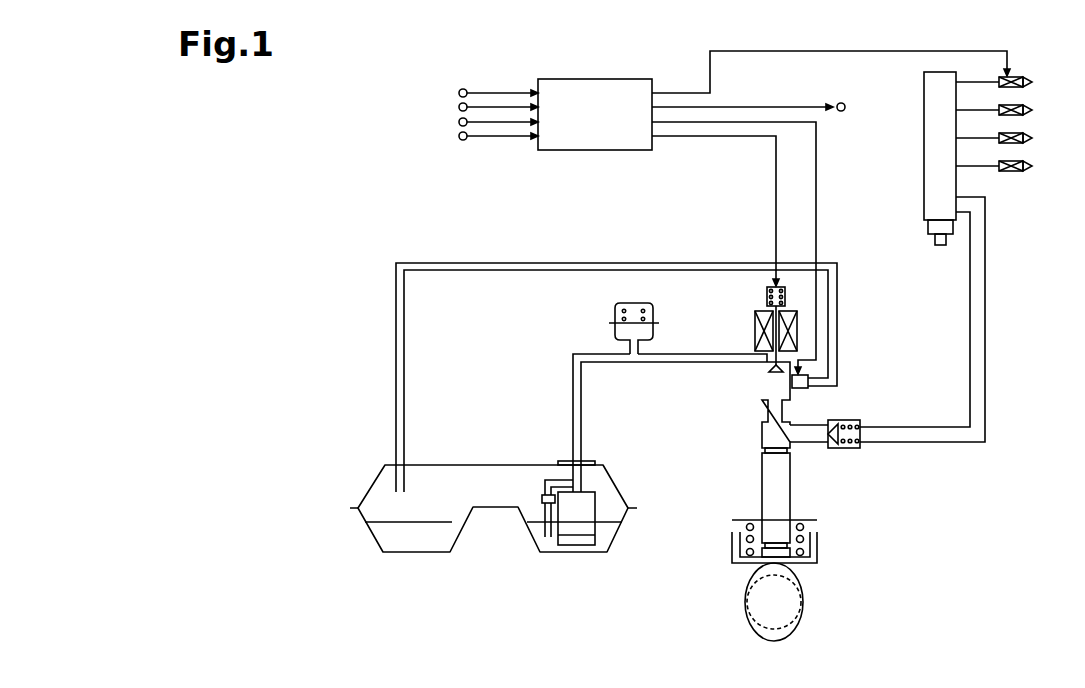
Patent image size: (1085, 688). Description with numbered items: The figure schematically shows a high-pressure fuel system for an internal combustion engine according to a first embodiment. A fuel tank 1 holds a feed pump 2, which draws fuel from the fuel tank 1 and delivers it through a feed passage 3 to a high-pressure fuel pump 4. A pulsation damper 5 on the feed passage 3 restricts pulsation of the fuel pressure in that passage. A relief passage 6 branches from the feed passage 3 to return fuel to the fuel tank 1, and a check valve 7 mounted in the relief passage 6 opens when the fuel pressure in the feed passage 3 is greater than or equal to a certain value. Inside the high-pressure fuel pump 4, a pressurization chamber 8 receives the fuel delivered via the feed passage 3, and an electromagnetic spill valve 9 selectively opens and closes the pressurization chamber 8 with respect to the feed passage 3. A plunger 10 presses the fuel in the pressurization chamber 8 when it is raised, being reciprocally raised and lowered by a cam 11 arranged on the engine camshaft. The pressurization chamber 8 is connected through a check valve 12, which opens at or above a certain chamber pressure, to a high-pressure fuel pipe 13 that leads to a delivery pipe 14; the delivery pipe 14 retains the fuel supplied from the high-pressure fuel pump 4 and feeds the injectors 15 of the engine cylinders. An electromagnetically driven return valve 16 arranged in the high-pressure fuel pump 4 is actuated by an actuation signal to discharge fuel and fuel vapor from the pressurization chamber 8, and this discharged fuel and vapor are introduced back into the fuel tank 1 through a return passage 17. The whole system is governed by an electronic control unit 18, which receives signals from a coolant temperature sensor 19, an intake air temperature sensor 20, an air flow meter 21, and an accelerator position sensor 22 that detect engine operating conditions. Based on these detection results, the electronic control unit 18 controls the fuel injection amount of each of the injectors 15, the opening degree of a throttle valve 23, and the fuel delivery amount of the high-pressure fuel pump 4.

The fuel tank 1 is at (486, 465).
The feed pump 2 is at (596, 501).
The feed passage 3 is at (655, 363).
The high-pressure fuel pump 4 is at (733, 418).
The pulsation damper 5 is at (615, 314).
The relief passage 6 is at (553, 479).
The check valve 7 is at (542, 499).
The pressurization chamber 8 is at (763, 377).
The electromagnetic spill valve 9 is at (755, 331).
The plunger 10 is at (762, 493).
The cam 11 is at (802, 586).
The check valve 12 is at (843, 448).
The high-pressure fuel pipe 13 is at (970, 330).
The delivery pipe 14 is at (924, 189).
The injectors 15 is at (1033, 82).
The return valve 16 is at (798, 390).
The return passage 17 is at (534, 272).
The electronic control unit 18 is at (618, 152).
The coolant temperature sensor 19 is at (459, 91).
The intake air temperature sensor 20 is at (459, 107).
The air flow meter 21 is at (459, 122).
The accelerator position sensor 22 is at (459, 137).
The throttle valve 23 is at (846, 108).